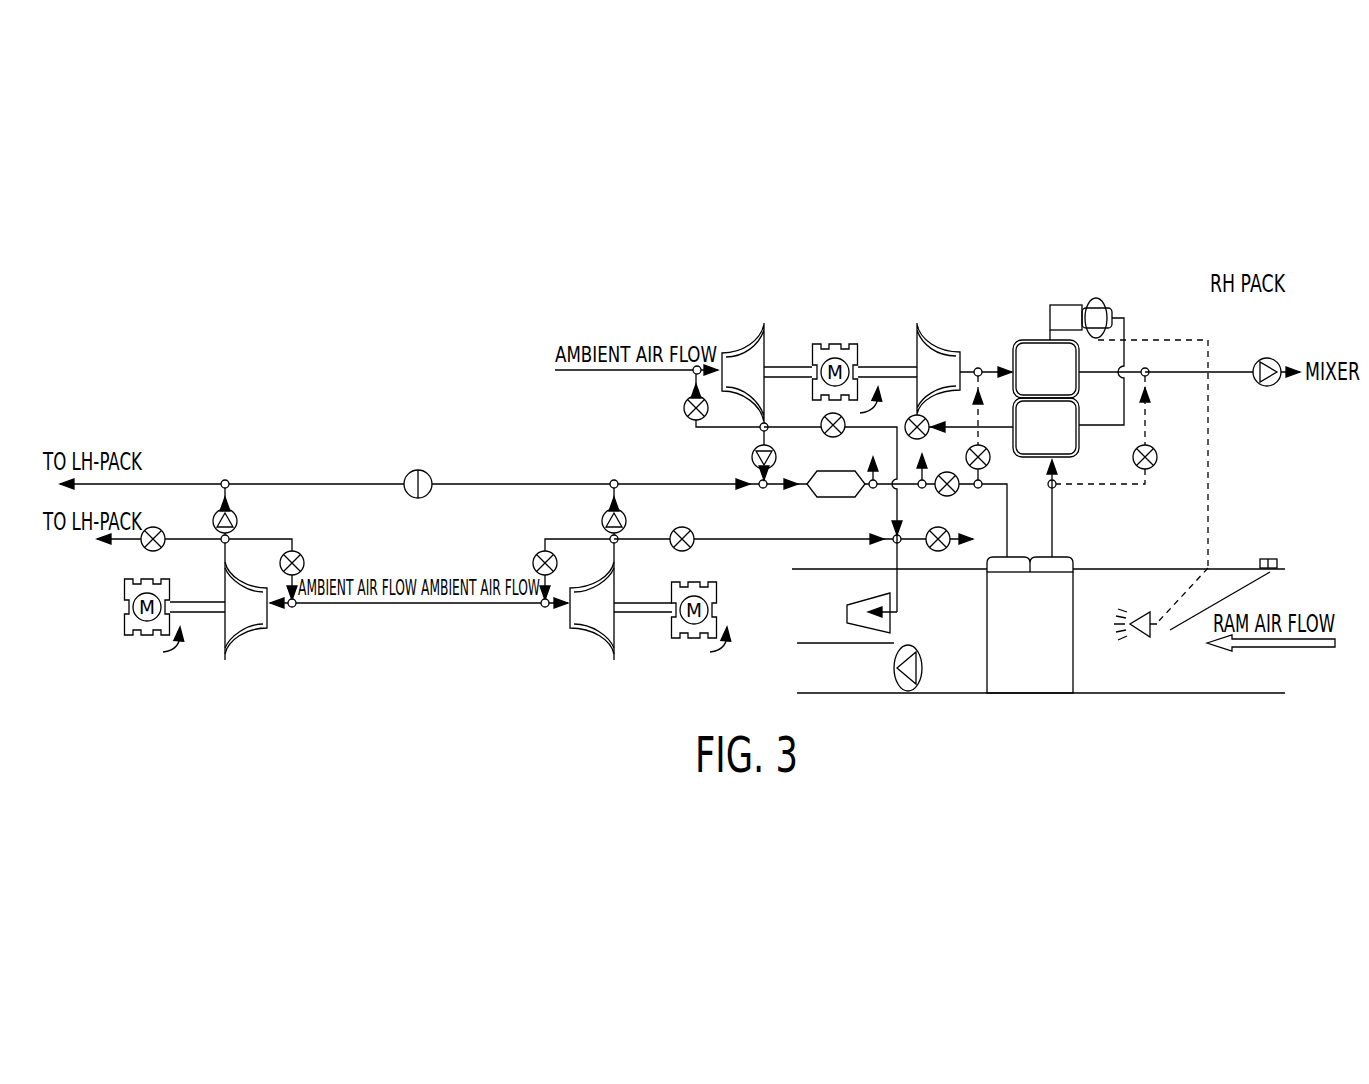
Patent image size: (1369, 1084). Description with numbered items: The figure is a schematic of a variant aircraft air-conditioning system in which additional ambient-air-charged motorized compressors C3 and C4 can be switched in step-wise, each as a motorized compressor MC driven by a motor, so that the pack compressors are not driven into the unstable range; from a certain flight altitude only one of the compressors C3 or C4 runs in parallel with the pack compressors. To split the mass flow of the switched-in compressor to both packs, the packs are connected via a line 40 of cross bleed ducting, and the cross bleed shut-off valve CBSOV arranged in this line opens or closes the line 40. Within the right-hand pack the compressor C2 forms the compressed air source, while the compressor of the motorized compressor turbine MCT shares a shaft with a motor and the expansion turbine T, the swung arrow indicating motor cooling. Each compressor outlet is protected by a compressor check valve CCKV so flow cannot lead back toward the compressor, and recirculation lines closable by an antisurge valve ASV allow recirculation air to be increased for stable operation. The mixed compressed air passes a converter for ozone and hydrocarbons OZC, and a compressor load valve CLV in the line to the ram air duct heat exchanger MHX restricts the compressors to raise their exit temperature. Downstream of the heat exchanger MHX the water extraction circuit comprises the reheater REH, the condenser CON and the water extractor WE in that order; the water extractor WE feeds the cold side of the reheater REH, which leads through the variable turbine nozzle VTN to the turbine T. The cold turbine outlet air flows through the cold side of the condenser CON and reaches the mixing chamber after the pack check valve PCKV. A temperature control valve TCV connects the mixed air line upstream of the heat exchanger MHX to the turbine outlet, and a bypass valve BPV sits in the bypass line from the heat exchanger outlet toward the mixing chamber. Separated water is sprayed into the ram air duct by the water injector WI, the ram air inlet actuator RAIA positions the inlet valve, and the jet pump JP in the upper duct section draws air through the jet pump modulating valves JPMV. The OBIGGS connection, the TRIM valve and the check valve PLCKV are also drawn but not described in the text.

The line (cross bleed ducting) 40 is at (508, 484).
The cross bleed shut-off valve CBSOV is at (416, 469).
The converter for ozone and/or hydrocarbons OZC is at (836, 484).
The temperature control valve TCV is at (984, 478).
The jet pump modulating valve JPMV is at (490, 497).
The antisurge valve ASV is at (494, 487).
The compressor check valve CCKV is at (494, 492).
The motorized compressor C3 is at (246, 608).
The motorized compressor C4 is at (592, 608).
The compressor C2 is at (743, 401).
The motorized compressor MC is at (428, 614).
The compressor load valve CLV is at (933, 524).
The on-board inert gas generating system valve OBIGGS is at (830, 512).
The motorized compressor turbine MCT is at (840, 377).
The expansion turbine T is at (938, 369).
The variable turbine nozzle VTN is at (934, 417).
The trim valve TRIM is at (958, 453).
The condenser CON is at (1046, 369).
The reheater REH is at (1046, 427).
The water extractor WE is at (1081, 319).
The bypass valve BPV is at (1164, 455).
The pack check valve PCKV is at (1266, 388).
The ram air duct heat exchanger MHX is at (1030, 625).
The jet pump JP is at (883, 613).
The pack louver check valve PLCKV is at (859, 667).
The ram air inlet actuator RAIA is at (1229, 582).
The water injector WI is at (1135, 614).